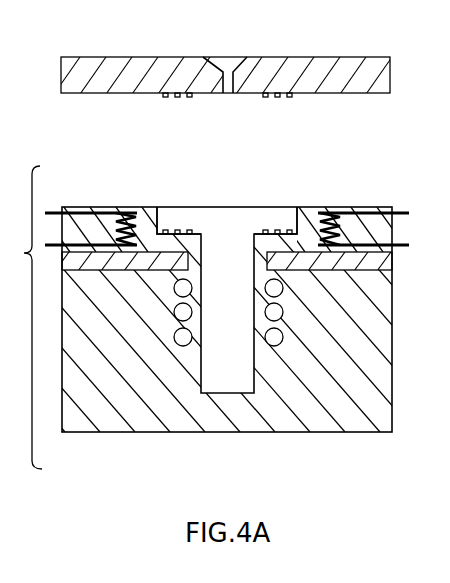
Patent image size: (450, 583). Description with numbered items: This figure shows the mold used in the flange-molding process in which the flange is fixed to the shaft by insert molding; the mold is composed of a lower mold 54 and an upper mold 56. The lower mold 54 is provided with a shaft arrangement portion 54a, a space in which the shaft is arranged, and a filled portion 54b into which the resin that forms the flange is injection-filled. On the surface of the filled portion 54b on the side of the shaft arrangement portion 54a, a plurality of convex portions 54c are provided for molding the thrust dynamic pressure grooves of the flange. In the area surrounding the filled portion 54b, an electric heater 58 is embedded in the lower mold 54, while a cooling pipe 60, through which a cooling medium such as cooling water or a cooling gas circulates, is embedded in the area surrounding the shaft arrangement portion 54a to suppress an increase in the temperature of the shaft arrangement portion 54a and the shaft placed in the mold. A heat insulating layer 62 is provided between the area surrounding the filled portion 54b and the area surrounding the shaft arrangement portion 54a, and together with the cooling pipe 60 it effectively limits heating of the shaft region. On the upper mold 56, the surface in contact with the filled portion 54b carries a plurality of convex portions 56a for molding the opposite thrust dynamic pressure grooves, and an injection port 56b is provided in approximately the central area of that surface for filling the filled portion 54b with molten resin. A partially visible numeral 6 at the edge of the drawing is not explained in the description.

The lower mold 54 is at (90, 424).
The shaft arrangement portion 54a is at (243, 395).
The filled portion 54b is at (166, 213).
The convex portions 54c is at (190, 230).
The upper mold 56 is at (352, 67).
The convex portions 56a is at (165, 100).
The injection port 56b is at (220, 57).
The electric heater 58 is at (52, 211).
The cooling pipe 60 is at (174, 291).
The heat insulating layer 62 is at (79, 260).
The element 6 is at (444, 289).